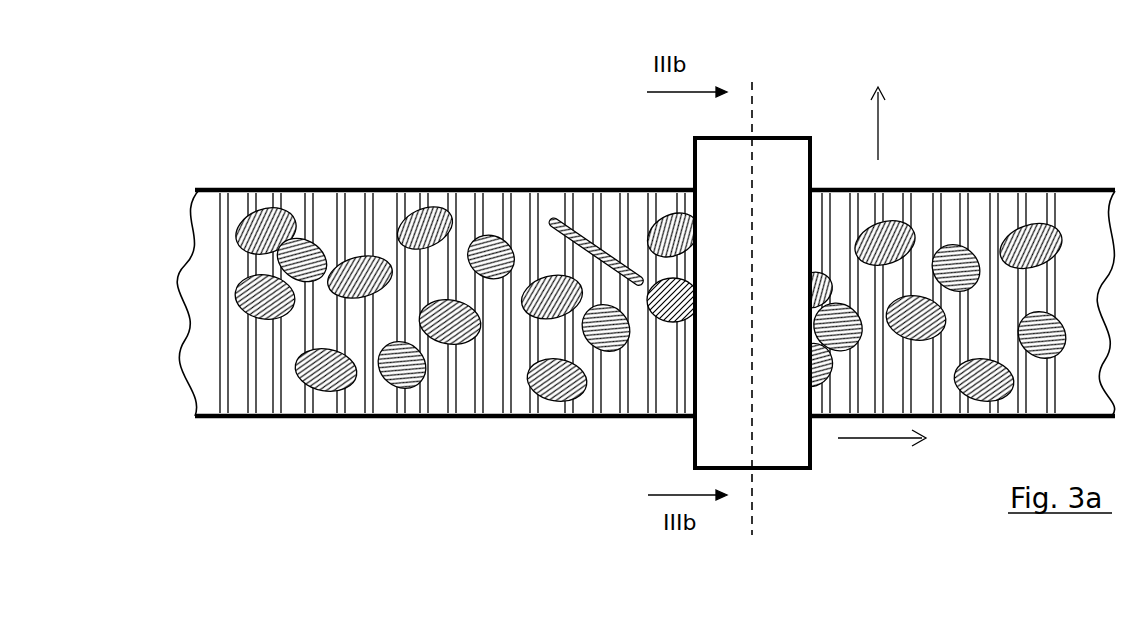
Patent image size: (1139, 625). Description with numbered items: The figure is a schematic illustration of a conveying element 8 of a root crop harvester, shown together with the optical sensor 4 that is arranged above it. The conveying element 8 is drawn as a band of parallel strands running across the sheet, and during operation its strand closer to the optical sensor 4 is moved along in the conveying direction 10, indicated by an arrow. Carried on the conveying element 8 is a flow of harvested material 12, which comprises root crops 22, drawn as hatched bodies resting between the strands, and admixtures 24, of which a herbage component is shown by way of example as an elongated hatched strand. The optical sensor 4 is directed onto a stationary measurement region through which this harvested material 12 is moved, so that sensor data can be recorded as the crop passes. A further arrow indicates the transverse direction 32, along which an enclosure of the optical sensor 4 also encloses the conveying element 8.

The optical sensor 4 is at (792, 320).
The conveying element 8 is at (965, 190).
The conveying direction 10 is at (882, 450).
The harvested material 12 is at (571, 101).
The root crops 22 is at (443, 187).
The admixtures 24 is at (553, 216).
The transverse direction 32 is at (892, 123).